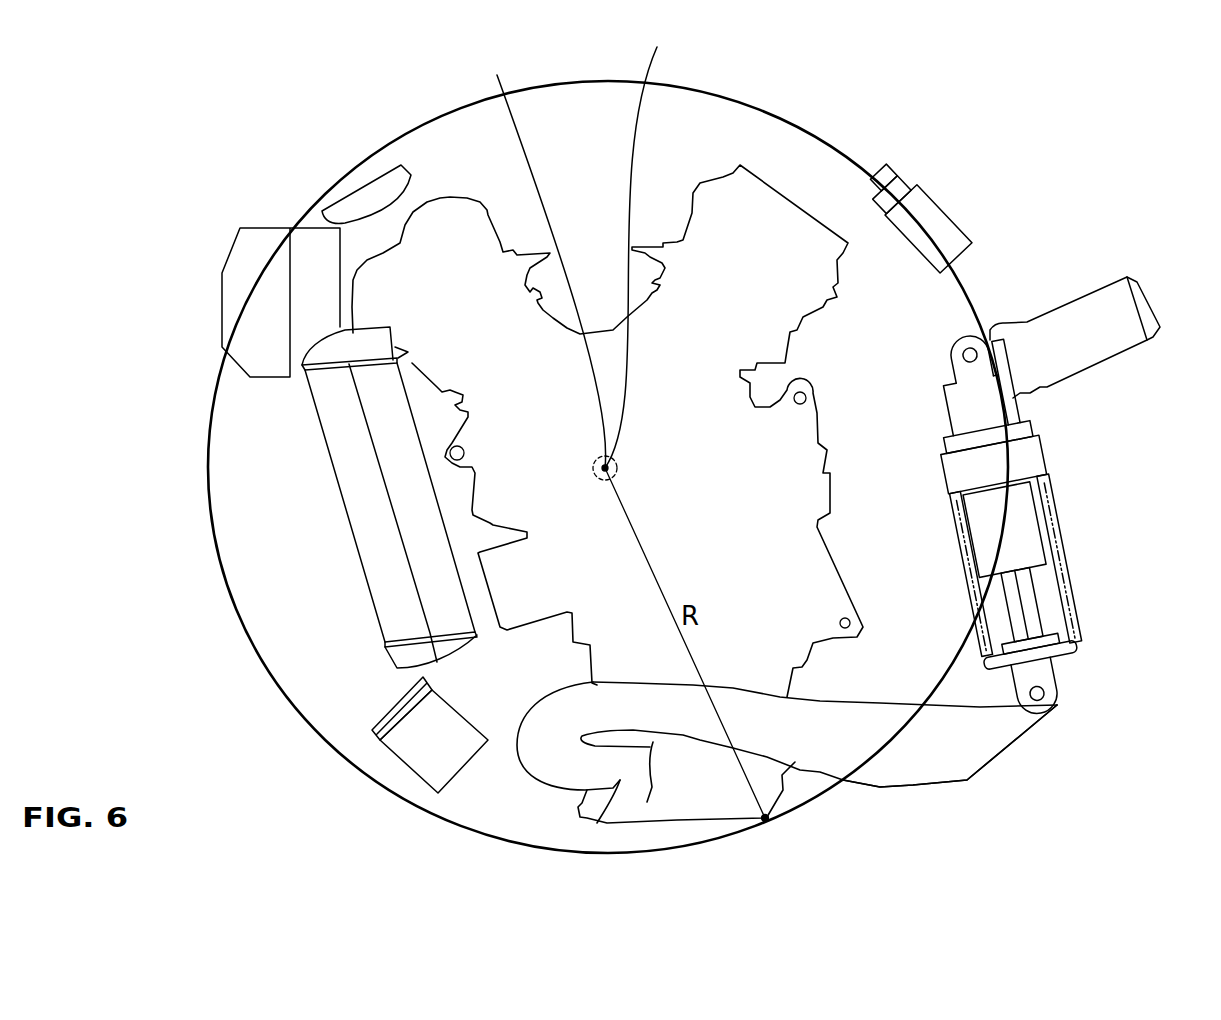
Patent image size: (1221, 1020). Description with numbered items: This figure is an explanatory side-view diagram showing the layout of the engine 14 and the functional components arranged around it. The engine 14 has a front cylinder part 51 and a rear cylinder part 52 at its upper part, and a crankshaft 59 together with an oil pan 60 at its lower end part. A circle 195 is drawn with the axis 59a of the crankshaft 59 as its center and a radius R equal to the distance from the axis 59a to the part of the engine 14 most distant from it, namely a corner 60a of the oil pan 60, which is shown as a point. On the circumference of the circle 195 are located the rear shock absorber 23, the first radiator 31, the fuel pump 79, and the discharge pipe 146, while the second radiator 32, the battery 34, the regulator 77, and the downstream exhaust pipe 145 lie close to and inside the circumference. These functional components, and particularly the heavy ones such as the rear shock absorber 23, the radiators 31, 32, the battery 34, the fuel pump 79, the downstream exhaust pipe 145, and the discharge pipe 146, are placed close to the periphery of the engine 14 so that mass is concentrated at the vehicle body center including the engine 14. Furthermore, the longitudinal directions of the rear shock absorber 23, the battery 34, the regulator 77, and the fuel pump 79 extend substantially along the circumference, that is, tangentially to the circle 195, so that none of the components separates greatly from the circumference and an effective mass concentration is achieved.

The engine 14 is at (773, 182).
The rear shock absorber 23 is at (1057, 529).
The first radiator 31 is at (243, 255).
The second radiator 32 is at (363, 517).
The battery 34 is at (418, 758).
The front cylinder part 51 is at (447, 187).
The rear cylinder part 52 is at (808, 210).
The crankshaft 59 is at (497, 76).
The axis 59a is at (652, 249).
The oil pan 60 is at (685, 800).
The corner 60a is at (767, 820).
The regulator 77 is at (367, 193).
The fuel pump 79 is at (947, 212).
The downstream exhaust pipe 145 is at (597, 823).
The discharge pipe 146 is at (915, 772).
The circle 195 is at (753, 107).